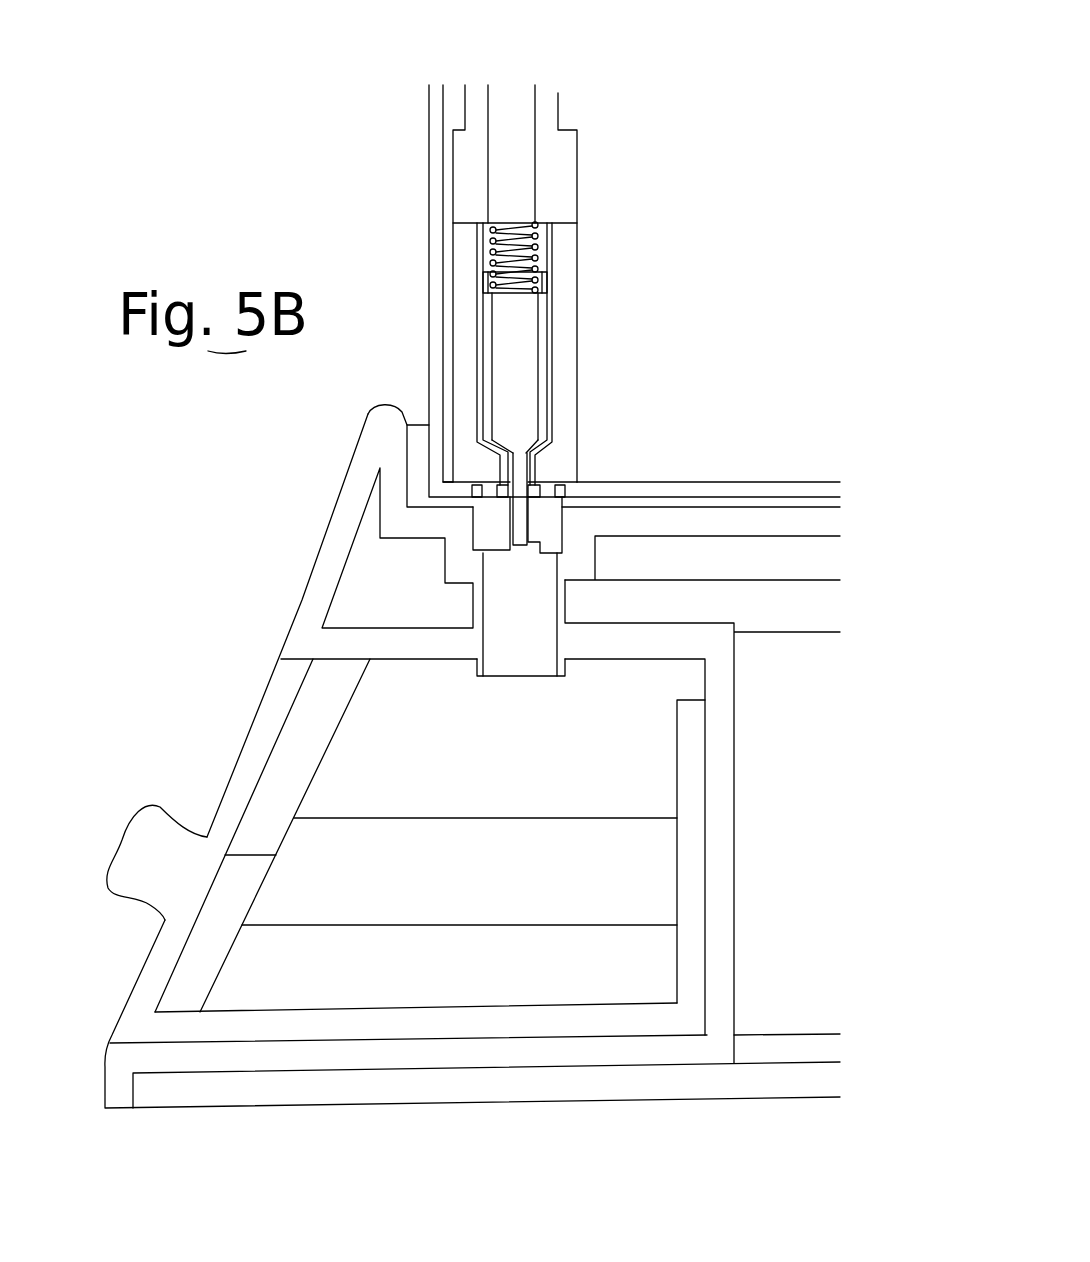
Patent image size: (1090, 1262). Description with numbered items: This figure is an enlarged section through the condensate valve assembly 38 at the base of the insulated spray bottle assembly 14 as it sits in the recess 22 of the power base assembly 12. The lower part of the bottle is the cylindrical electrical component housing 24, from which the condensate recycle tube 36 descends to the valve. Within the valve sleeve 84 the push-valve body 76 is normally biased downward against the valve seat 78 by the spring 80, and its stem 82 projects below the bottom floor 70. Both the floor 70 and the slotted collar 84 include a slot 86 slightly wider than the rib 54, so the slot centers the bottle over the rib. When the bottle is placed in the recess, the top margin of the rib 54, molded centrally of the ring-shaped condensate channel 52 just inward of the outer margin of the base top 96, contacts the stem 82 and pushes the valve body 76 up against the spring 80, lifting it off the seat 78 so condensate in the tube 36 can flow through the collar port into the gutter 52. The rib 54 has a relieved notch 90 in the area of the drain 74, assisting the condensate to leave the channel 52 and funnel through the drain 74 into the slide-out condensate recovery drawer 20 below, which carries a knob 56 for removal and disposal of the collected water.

The power base assembly 12 is at (292, 530).
The insulated spray bottle assembly 14 is at (345, 157).
The condensate recovery drawer 20 is at (248, 750).
The recess 22 is at (415, 418).
The electrical component housing 24 is at (430, 210).
The condensate recycle tube 36 is at (515, 166).
The condensate valve assembly 38 is at (672, 467).
The condensate channel 52 is at (548, 533).
The rib 54 is at (517, 520).
The knob 56 is at (126, 838).
The bottom floor 70 is at (742, 482).
The drain 74 is at (500, 667).
The push-valve body 76 is at (528, 388).
The valve seat 78 is at (543, 452).
The spring 80 is at (540, 250).
The stem 82 is at (516, 472).
The valve sleeve 84 is at (567, 330).
The slot 86 is at (527, 497).
The relieved notch 90 is at (524, 552).
The top 96 is at (747, 517).